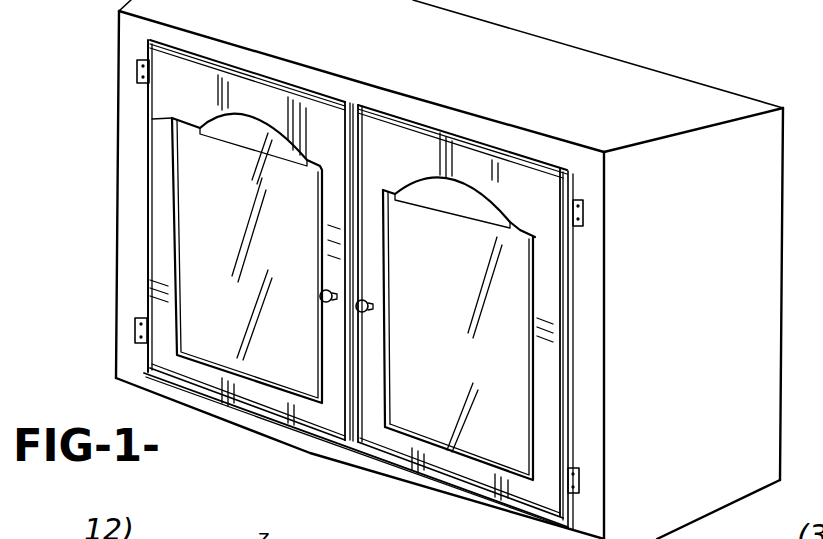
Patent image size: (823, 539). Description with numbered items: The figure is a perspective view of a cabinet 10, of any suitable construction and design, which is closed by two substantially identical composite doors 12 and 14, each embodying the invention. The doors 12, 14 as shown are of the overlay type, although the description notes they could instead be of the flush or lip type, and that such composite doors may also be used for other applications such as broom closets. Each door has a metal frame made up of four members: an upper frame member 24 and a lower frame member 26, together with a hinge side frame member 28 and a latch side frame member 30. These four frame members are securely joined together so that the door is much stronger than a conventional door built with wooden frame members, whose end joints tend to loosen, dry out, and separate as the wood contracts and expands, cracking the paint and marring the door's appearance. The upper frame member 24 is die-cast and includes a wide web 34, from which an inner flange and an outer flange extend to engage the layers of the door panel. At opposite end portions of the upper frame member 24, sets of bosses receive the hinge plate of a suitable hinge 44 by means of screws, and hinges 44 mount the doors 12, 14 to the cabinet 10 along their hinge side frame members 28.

The cabinet 10 is at (270, 445).
The composite door 12 is at (460, 296).
The composite door 14 is at (260, 66).
The upper frame member 24 is at (406, 319).
The lower frame member 26 is at (491, 502).
The hinge side frame member 28 is at (572, 331).
The latch side frame member 30 is at (389, 315).
The wide web 34 is at (508, 220).
The hinge 44 is at (585, 209).